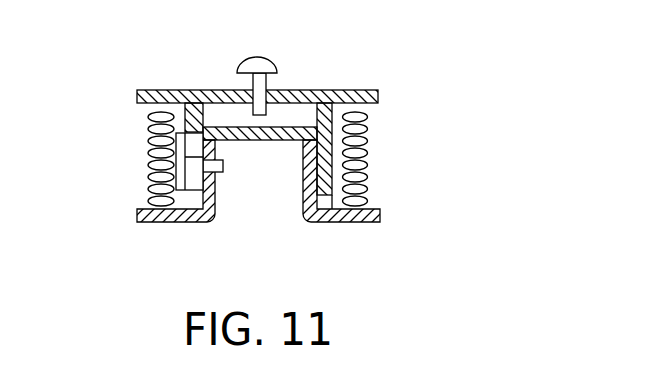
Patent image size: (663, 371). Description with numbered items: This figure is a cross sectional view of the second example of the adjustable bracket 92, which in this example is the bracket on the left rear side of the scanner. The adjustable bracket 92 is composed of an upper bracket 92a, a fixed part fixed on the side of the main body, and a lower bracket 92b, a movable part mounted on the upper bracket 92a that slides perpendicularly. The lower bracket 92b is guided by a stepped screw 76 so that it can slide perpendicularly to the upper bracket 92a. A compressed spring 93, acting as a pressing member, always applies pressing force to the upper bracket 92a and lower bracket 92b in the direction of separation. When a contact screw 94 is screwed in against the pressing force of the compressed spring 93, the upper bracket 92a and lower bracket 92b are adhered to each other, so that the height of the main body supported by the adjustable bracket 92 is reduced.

The adjustable bracket 92 is at (448, 114).
The upper bracket 92a is at (345, 89).
The lower bracket 92b is at (381, 219).
The compressed spring 93 is at (150, 177).
The contact screw 94 is at (268, 56).
The stepped screw 76 is at (176, 140).